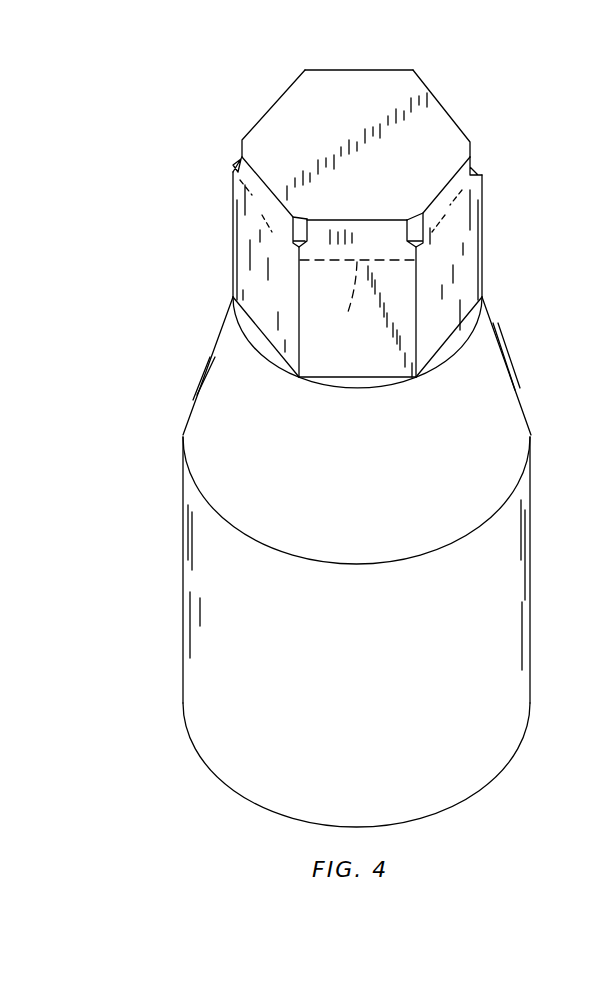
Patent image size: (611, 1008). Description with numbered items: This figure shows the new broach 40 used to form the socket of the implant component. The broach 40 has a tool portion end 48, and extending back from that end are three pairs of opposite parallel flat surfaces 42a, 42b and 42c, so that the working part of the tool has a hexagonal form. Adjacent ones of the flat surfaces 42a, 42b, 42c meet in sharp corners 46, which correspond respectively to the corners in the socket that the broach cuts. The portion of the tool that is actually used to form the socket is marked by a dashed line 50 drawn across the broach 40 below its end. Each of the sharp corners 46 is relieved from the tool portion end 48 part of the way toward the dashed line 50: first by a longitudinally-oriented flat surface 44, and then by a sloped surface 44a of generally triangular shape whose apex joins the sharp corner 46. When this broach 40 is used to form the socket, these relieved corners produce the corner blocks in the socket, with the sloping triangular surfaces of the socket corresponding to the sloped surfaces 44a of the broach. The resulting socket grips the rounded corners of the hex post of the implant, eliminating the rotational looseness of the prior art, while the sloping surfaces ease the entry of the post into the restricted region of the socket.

The broach 40 is at (255, 658).
The flat surface 42a is at (449, 108).
The flat surface 42b is at (360, 70).
The flat surface 42c is at (267, 108).
The longitudinally-oriented flat surface 44 is at (304, 70).
The sloped surface 44a is at (232, 165).
The sharp corner 46 is at (232, 200).
The tool portion end 48 is at (355, 130).
The dashed line 50 is at (358, 302).